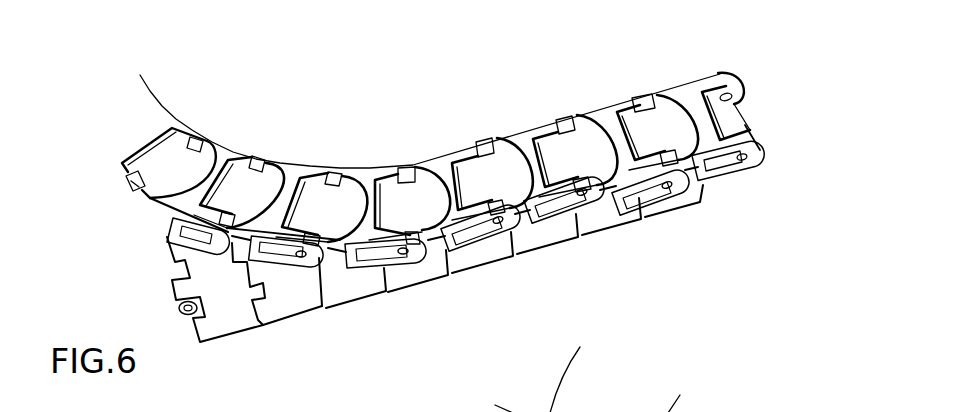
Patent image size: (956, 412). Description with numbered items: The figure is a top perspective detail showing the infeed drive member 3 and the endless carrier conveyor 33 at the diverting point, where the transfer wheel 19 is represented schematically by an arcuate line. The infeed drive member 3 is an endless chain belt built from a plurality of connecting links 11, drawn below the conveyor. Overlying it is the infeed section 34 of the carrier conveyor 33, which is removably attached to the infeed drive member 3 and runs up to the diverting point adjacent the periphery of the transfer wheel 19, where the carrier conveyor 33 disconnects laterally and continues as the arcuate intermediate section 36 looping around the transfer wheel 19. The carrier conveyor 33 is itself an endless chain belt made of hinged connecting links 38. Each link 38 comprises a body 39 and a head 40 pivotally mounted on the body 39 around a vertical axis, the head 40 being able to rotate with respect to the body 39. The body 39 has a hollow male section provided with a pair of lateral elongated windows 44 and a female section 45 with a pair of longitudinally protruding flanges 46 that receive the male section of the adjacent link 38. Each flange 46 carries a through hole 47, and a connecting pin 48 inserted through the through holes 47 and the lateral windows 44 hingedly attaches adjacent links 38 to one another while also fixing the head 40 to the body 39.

The infeed drive member 3 is at (615, 230).
The connecting link 11 is at (244, 318).
The transfer wheel 19 is at (160, 97).
The endless carrier conveyor 33 is at (218, 152).
The infeed section 34 is at (587, 110).
The arcuate intermediate section 36 is at (283, 201).
The hinged connecting link 38 is at (457, 147).
The body 39 is at (692, 92).
The head 40 is at (152, 167).
The lateral elongated window 44 is at (624, 408).
The female section 45 is at (740, 72).
The flange 46 is at (737, 87).
The through hole 47 is at (757, 121).
The connecting pin 48 is at (128, 200).